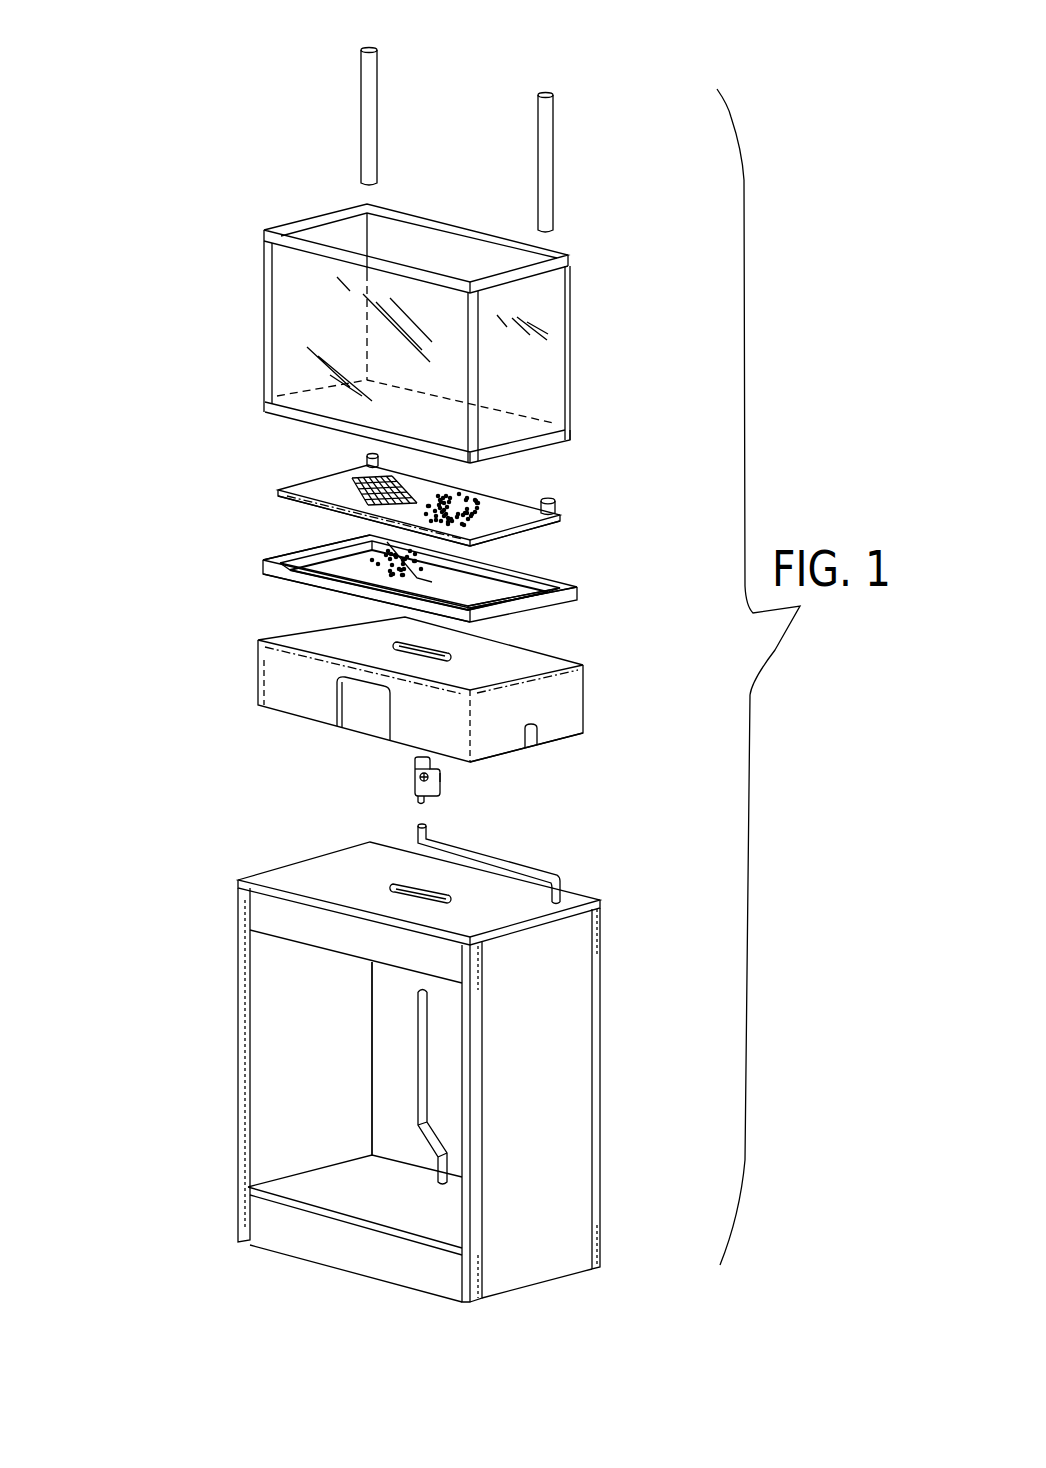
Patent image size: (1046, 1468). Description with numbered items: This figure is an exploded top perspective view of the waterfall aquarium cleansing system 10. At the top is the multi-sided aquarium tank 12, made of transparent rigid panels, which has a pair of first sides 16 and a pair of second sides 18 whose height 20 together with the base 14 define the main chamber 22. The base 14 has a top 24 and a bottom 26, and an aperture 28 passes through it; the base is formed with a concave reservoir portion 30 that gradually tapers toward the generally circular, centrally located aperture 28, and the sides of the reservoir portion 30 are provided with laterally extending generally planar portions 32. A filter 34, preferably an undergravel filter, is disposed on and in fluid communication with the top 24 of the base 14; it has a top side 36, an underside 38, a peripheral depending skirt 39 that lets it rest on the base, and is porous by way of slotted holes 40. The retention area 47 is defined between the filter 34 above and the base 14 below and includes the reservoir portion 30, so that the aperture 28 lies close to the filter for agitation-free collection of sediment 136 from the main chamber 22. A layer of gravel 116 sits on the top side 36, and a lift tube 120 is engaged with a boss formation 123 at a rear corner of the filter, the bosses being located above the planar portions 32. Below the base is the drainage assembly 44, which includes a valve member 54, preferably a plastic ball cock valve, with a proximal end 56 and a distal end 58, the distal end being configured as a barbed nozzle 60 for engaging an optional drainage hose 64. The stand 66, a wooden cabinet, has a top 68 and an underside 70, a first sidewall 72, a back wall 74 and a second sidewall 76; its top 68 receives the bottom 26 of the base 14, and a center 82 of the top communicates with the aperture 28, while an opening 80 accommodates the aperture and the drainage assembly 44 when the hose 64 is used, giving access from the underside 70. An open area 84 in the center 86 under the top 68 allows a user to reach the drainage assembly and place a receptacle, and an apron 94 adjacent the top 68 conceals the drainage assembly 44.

The waterfall aquarium cleansing system 10 is at (158, 695).
The aquarium tank 12 is at (436, 333).
The base 14 is at (510, 566).
The first sides 16 is at (285, 410).
The second sides 18 is at (527, 457).
The height 20 is at (484, 386).
The main chamber 22 is at (282, 325).
The top of the base 24 is at (432, 599).
The bottom of the base 26 is at (313, 588).
The aperture 28 is at (480, 585).
The concave reservoir portion 30 is at (482, 623).
The generally planar portions 32 is at (300, 548).
The filter 34 is at (513, 508).
The top side of the filter 36 is at (448, 486).
The underside of the filter 38 is at (310, 504).
The peripheral depending skirt 39 is at (533, 537).
The slotted holes 40 is at (412, 480).
The drainage assembly 44 is at (522, 795).
The retention area 47 is at (306, 518).
The valve member 54 is at (371, 785).
The proximal end 56 is at (460, 755).
The distal end 58 is at (418, 800).
The barbed nozzle 60 is at (428, 797).
The drainage hose 64 is at (422, 1083).
The stand 66 is at (592, 1212).
The top of the stand 68 is at (394, 873).
The underside of the top 70 is at (250, 905).
The first sidewall 72 is at (268, 1020).
The back wall 74 is at (434, 1014).
The second sidewall 76 is at (590, 1180).
The opening 80 is at (413, 889).
The center of the top 82 is at (403, 885).
The open area 84 is at (312, 1132).
The center of the stand 86 is at (340, 993).
The apron 94 is at (263, 922).
The gravel layer 116 is at (556, 514).
The lift tube 120 is at (548, 150).
The boss formation 123 is at (365, 458).
The sediment 136 is at (297, 573).